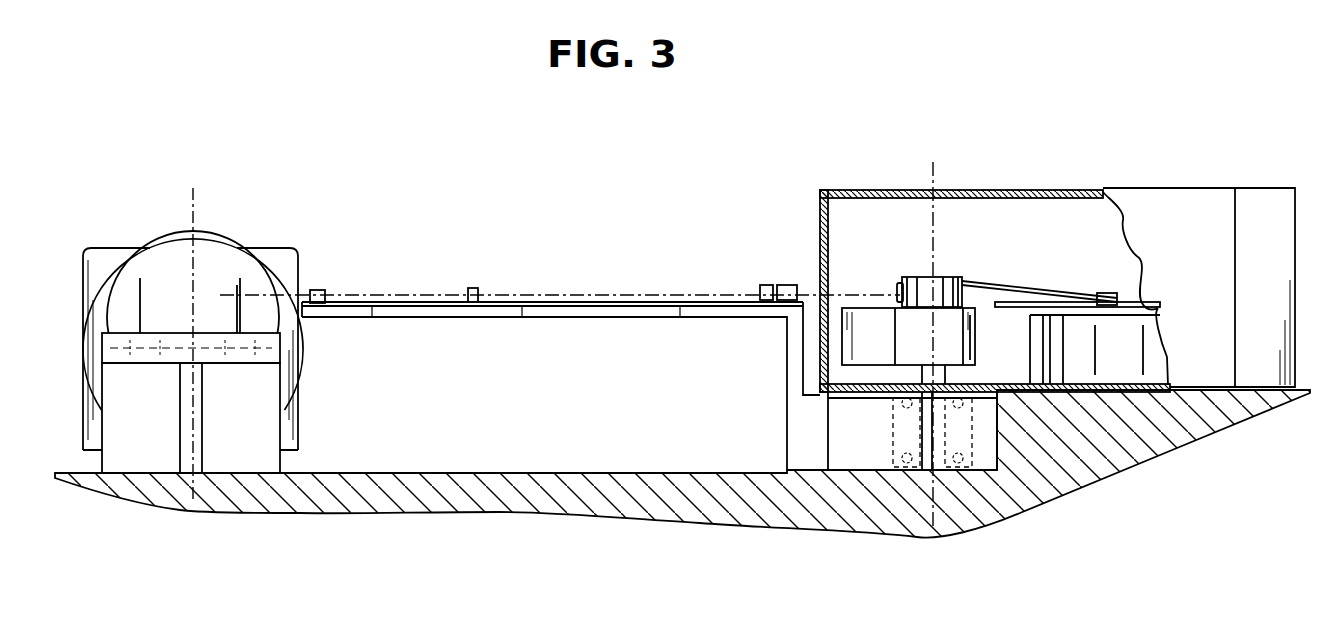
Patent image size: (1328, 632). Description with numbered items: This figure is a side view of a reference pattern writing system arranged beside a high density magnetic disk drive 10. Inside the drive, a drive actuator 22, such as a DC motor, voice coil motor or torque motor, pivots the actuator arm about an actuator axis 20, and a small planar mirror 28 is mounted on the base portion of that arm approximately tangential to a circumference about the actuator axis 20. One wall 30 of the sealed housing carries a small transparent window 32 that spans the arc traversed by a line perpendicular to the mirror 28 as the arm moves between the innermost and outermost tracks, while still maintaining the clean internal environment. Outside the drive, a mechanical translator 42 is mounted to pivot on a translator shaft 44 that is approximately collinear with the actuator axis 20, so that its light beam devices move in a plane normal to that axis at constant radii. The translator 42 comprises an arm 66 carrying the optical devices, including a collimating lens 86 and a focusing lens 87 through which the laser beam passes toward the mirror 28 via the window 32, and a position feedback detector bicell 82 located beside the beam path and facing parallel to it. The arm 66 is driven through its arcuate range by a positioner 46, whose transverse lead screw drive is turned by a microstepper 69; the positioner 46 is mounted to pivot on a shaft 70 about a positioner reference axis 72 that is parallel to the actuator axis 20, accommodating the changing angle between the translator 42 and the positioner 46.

The magnetic disk drive 10 is at (1090, 157).
The actuator axis 20 is at (940, 165).
The drive actuator 22 is at (842, 350).
The planar mirror 28 is at (897, 283).
The wall 30 is at (820, 225).
The transparent window 32 is at (820, 280).
The mechanical translator 42 is at (588, 264).
The translator shaft 44 is at (975, 465).
The positioner 46 is at (155, 233).
The translator arm 66 is at (555, 318).
The microstepper 69 is at (218, 242).
The shaft 70 is at (180, 435).
The positioner reference axis 72 is at (197, 193).
The position feedback detector bicell 82 is at (473, 288).
The collimating lens 86 is at (322, 290).
The focusing lens 87 is at (762, 285).